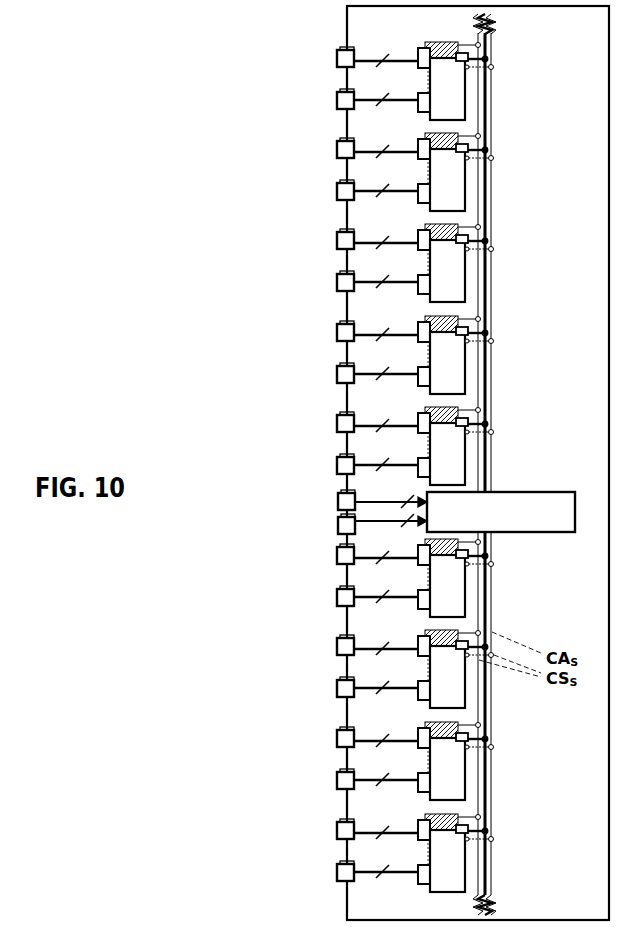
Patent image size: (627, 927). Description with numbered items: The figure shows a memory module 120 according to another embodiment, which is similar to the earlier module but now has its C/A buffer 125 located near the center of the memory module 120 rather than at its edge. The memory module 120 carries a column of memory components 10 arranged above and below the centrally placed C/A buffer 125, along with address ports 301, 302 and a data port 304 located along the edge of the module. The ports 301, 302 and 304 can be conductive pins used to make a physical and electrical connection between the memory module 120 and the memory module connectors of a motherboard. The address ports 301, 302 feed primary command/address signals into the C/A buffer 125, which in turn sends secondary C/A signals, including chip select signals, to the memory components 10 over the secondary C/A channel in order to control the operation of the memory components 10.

The memory component 10 is at (415, 467).
The memory module 120 is at (478, 463).
The C/A buffer 125 is at (501, 512).
The address port 301 is at (338, 498).
The address port 302 is at (338, 523).
The data port 304 is at (338, 878).